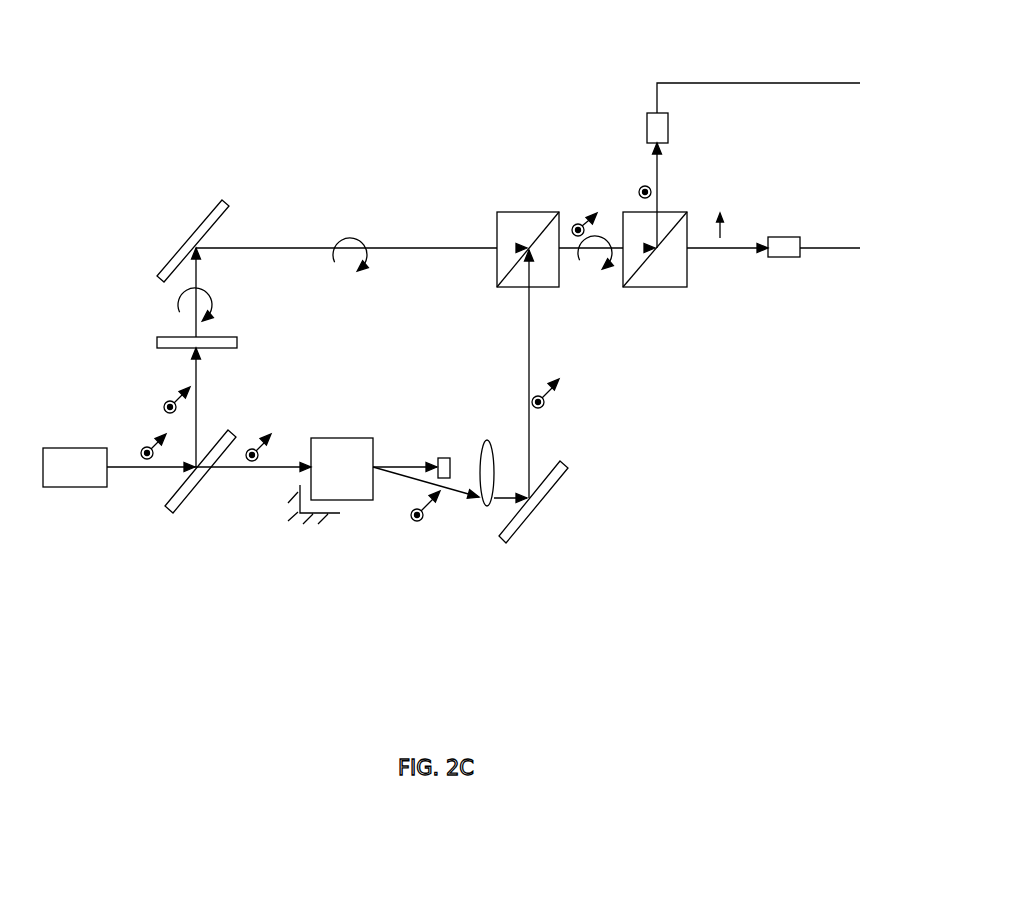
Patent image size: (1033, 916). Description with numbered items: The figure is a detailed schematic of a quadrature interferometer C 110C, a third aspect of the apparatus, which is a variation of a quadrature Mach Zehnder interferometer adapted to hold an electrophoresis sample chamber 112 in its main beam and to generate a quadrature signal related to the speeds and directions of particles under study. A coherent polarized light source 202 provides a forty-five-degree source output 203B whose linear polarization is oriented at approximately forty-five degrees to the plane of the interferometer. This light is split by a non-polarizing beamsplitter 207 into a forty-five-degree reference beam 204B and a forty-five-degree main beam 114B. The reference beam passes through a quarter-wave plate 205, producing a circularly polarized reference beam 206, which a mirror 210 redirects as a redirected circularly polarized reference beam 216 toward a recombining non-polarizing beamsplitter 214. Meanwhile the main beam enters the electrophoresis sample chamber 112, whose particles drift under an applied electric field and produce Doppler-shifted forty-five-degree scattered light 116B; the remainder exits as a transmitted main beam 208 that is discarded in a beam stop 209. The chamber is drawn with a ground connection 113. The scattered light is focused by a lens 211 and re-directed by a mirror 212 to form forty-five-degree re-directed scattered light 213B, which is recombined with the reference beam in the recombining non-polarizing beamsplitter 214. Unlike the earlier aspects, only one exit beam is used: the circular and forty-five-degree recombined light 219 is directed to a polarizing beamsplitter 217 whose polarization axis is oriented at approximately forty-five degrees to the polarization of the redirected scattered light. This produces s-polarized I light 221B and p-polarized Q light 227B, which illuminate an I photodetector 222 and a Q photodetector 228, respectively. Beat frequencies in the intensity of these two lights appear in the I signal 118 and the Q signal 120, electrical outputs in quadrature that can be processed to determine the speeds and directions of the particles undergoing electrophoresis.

The quadrature interferometer C 110C is at (412, 97).
The coherent polarized light source 202 is at (87, 445).
The 45° source output 203B is at (140, 453).
The 45° reference beam 204B is at (163, 395).
The 45° main beam 114B is at (272, 430).
The quarter-wave plate 205 is at (240, 347).
The circularly polarized reference beam 206 is at (215, 309).
The non-polarizing beamsplitter 207 is at (175, 517).
The transmitted main beam 208 is at (405, 465).
The beam stop 209 is at (452, 458).
The mirror 210 is at (152, 278).
The lens 211 is at (500, 442).
The mirror 212 is at (505, 545).
The 45° re-directed scattered light 213B is at (552, 398).
The recombining non-polarizing beamsplitter 214 is at (488, 288).
The redirected circularly polarized reference beam 216 is at (352, 237).
The polarizing beamsplitter 217 is at (630, 297).
The circular and 45° recombined light 219 is at (588, 208).
The s-polarized I light 221B is at (633, 194).
The I photodetector 222 is at (670, 128).
The p-polarized Q light 227B is at (722, 210).
The Q photodetector 228 is at (782, 262).
The I signal 118 is at (860, 83).
The Q signal 120 is at (860, 248).
The electrophoresis sample chamber 112 is at (350, 505).
The ground connection 113 is at (285, 530).
The 45° scattered light 116B is at (428, 525).